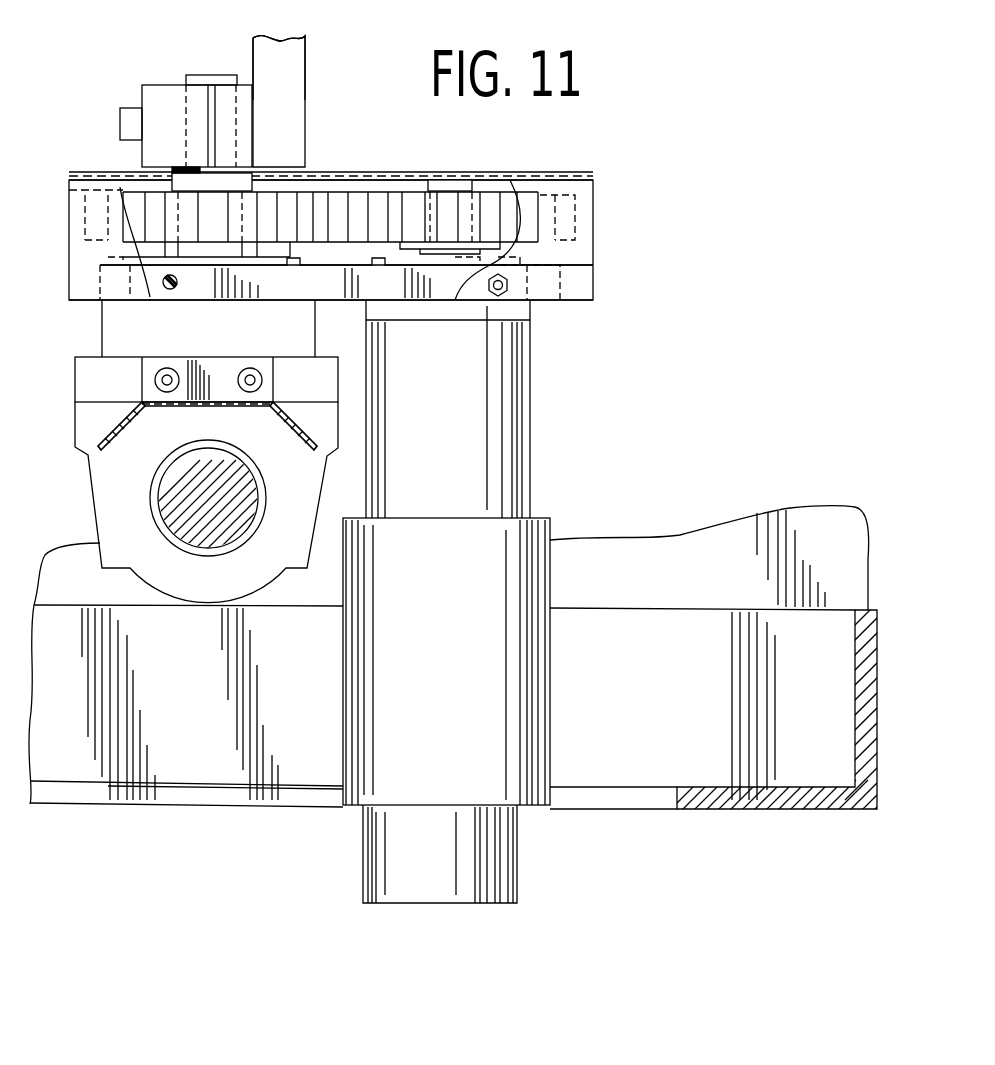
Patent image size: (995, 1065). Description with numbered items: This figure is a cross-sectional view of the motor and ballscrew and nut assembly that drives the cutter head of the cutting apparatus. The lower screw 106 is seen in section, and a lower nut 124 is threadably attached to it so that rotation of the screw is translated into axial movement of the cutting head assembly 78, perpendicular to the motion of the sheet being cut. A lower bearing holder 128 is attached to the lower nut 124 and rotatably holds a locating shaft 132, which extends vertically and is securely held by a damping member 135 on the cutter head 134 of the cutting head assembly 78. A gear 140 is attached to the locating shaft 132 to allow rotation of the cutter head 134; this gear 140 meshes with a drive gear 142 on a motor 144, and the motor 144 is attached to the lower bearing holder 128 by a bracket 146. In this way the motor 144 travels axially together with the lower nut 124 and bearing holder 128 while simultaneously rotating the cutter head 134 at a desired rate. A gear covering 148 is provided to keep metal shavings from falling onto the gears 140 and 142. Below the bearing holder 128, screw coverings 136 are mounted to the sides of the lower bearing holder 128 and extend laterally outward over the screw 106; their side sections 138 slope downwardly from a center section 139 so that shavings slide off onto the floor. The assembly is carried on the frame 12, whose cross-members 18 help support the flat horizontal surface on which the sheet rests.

The frame 12 is at (765, 814).
The cross-members 18 is at (652, 811).
The cutting head assembly 78 is at (307, 66).
The lower screw 106 is at (153, 505).
The lower nut 124 is at (86, 480).
The lower bearing holder 128 is at (100, 332).
The locating shaft 132 is at (168, 174).
The cutter head 134 is at (306, 101).
The damping member 135 is at (160, 95).
The screw coverings 136 is at (106, 430).
The side sections 138 is at (127, 415).
The center section 139 is at (213, 402).
The gear 140 is at (307, 193).
The drive gear 142 is at (512, 178).
The motor 144 is at (535, 478).
The bracket 146 is at (335, 300).
The gear covering 148 is at (600, 268).